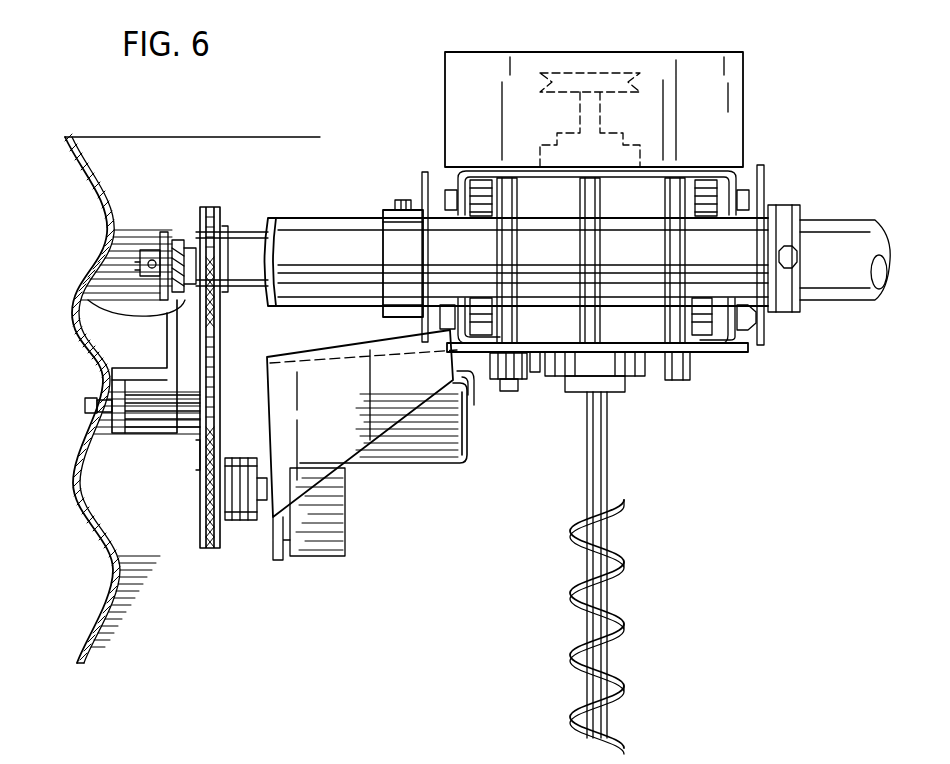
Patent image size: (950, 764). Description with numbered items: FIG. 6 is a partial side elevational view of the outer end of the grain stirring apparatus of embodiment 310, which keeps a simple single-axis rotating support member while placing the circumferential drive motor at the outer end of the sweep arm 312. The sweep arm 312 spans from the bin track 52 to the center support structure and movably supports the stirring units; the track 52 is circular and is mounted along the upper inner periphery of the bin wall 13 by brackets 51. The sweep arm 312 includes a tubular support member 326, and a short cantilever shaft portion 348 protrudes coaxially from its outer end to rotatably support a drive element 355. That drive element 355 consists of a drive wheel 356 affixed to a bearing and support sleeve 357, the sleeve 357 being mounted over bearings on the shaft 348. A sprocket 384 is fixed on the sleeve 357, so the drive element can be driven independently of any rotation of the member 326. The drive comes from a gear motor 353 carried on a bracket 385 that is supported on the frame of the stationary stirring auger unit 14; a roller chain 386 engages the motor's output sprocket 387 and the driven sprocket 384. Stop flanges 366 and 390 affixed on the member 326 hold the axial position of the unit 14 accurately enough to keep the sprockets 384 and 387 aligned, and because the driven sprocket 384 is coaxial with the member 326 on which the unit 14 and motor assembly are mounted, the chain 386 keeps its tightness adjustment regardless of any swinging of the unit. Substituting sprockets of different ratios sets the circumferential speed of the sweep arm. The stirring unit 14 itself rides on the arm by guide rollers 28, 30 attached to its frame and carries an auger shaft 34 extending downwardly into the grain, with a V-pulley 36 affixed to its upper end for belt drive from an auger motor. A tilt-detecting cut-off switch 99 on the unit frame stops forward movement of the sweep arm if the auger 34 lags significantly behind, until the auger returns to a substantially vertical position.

The bin wall 13 is at (100, 592).
The stirring auger unit 14 is at (762, 82).
The guide roller 28 is at (483, 182).
The guide roller 30 is at (496, 330).
The auger shaft 34 is at (606, 493).
The V-pulley 36 is at (600, 72).
The bracket 51 is at (146, 368).
The bin track 52 is at (100, 306).
The tilt-detecting cut-off switch 99 is at (468, 386).
The embodiment 310 is at (700, 437).
The sweep arm 312 is at (326, 214).
The support member 326 is at (352, 286).
The cantilever shaft portion 348 is at (148, 250).
The gear motor 353 is at (426, 456).
The drive element 355 is at (231, 230).
The drive wheel 356 is at (193, 220).
The bearing and support sleeve 357 is at (240, 290).
The stop flange 366 is at (426, 170).
The sprocket 384 is at (230, 241).
The bracket 385 is at (350, 412).
The roller chain 386 is at (200, 460).
The output sprocket 387 is at (226, 546).
The stop flange 390 is at (766, 185).